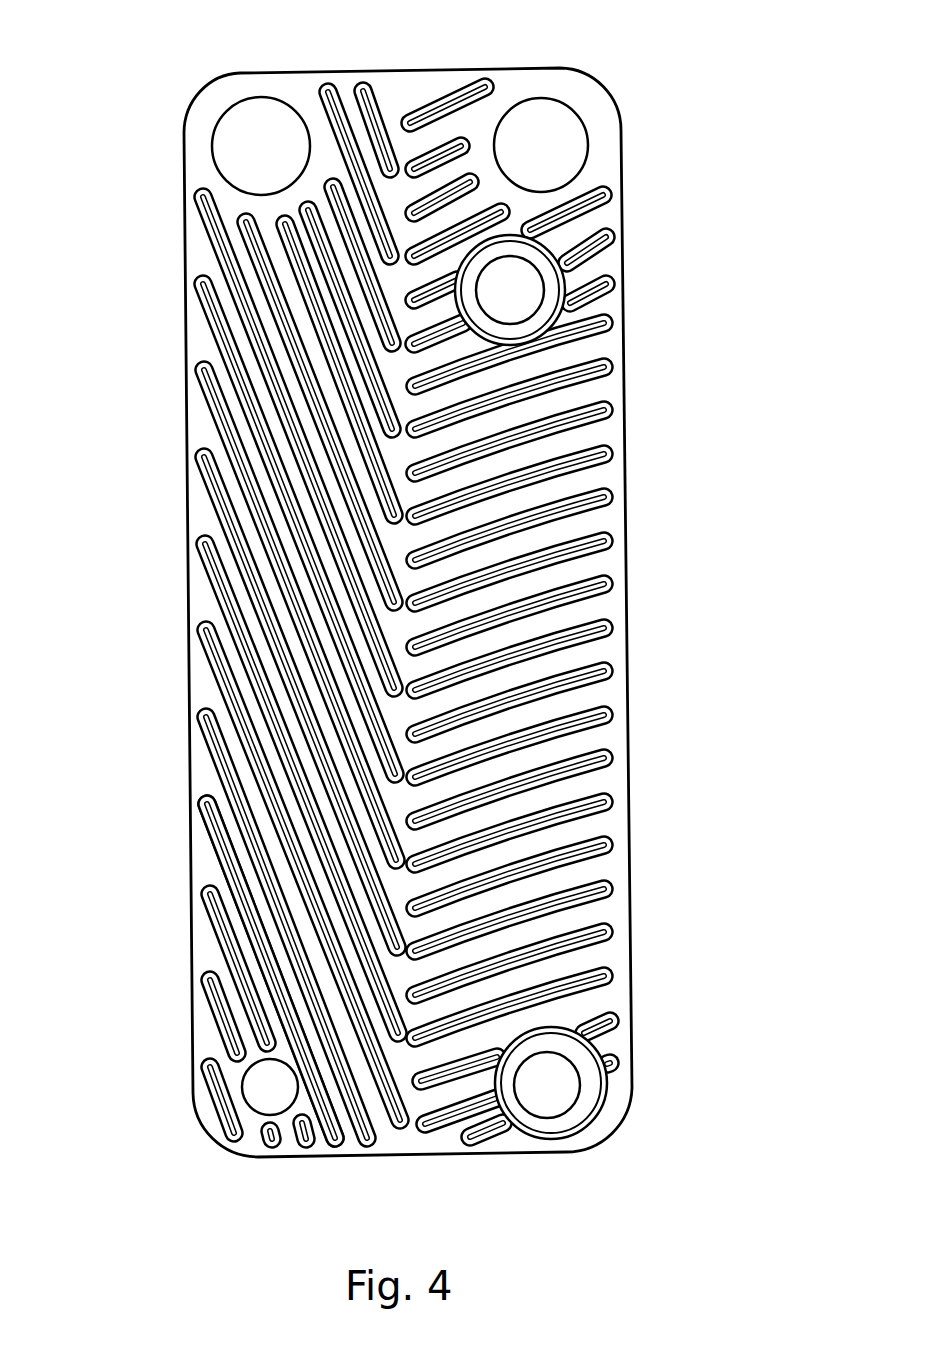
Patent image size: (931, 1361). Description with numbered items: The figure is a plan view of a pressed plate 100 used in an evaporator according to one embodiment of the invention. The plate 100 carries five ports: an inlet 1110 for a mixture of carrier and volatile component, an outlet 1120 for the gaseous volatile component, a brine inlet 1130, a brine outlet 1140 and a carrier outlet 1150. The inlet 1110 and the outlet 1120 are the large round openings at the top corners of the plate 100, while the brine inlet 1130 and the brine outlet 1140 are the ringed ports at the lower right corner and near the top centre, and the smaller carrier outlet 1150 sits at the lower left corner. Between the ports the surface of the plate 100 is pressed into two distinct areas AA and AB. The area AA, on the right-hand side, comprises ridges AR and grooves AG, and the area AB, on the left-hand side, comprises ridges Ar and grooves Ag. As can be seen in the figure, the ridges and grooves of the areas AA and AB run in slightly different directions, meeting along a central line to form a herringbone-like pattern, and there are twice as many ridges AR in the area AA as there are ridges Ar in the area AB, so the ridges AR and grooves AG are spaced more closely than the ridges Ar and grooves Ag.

The heat exchanger plate 100 is at (792, 148).
The inlet 1110 is at (587, 124).
The outlet for gaseous volatile component 1120 is at (212, 138).
The brine inlet 1130 is at (600, 1052).
The brine outlet 1140 is at (555, 272).
The carrier outlet 1150 is at (242, 1078).
The area AA is at (563, 543).
The grooves AG is at (600, 660).
The ridges AR is at (614, 738).
The area AB is at (233, 580).
The grooves Ag is at (215, 793).
The ridges Ar is at (217, 845).